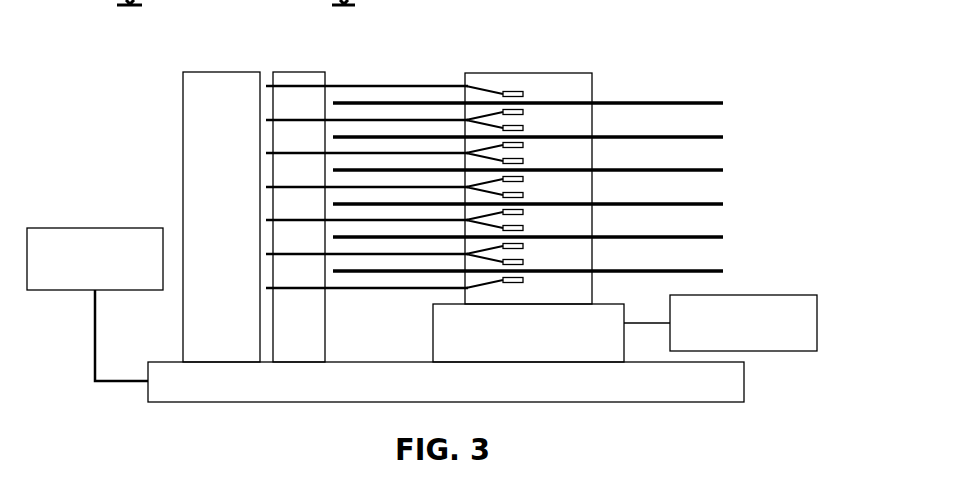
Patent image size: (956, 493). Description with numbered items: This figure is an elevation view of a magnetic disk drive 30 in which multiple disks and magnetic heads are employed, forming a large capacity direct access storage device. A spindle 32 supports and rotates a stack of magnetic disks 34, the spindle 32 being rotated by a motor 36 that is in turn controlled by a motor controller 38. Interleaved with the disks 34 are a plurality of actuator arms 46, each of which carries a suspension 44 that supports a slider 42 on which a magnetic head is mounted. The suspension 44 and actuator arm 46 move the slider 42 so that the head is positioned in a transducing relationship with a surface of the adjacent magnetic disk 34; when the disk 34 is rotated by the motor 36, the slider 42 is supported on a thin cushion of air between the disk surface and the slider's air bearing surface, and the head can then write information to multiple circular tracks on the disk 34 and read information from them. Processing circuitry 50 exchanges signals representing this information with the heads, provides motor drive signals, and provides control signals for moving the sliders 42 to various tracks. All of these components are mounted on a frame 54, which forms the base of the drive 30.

The magnetic disk drive 30 is at (668, 71).
The spindle 32 is at (582, 73).
The magnetic disk 34 is at (723, 103).
The motor 36 is at (543, 345).
The motor controller 38 is at (777, 351).
The slider 42 is at (523, 112).
The suspension 44 is at (498, 120).
The actuator arm 46 is at (433, 118).
The processing circuitry 50 is at (66, 228).
The frame 54 is at (198, 402).